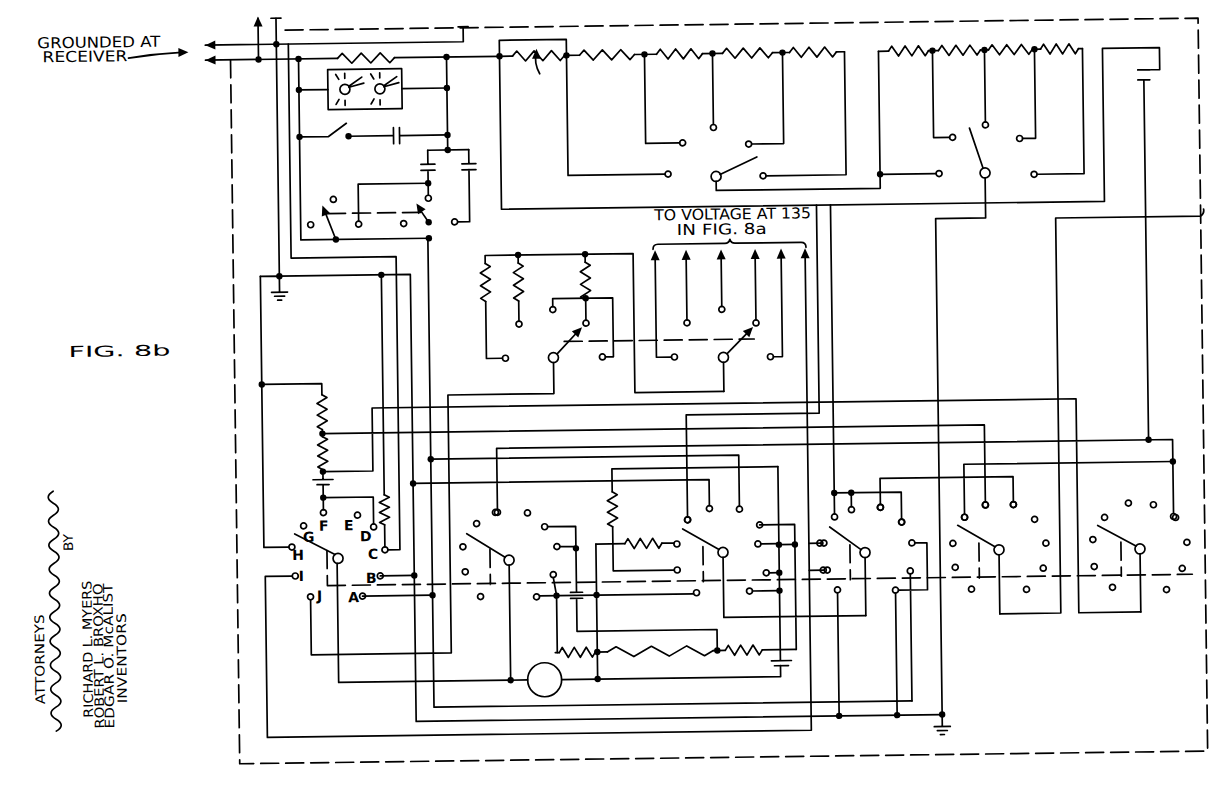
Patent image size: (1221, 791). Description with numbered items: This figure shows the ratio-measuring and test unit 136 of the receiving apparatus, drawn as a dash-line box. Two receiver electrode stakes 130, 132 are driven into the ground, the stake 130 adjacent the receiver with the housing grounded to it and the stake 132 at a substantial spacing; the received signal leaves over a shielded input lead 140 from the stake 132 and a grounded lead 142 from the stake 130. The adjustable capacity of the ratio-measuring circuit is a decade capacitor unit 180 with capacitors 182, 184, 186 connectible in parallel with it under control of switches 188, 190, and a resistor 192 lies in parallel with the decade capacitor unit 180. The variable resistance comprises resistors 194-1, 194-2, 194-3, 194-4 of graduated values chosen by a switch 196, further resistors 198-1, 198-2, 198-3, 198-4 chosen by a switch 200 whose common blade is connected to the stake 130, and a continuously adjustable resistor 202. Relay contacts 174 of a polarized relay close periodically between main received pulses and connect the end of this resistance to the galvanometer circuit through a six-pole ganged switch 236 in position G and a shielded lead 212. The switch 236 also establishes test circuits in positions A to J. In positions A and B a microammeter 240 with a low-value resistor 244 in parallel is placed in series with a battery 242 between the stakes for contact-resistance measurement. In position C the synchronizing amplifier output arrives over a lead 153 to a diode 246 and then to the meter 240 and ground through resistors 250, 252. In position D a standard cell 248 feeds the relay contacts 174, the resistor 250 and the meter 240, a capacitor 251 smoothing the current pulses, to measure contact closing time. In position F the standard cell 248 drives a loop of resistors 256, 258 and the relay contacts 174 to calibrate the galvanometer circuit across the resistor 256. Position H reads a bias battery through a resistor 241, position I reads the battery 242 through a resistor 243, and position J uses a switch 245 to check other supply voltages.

The receiver electrode stake 130 is at (222, 38).
The receiver electrode stake 132 is at (222, 57).
The ratio-measuring and test unit 136 is at (235, 186).
The shielded input lead 140 is at (262, 16).
The grounded lead 142 is at (283, 17).
The lead 153 is at (473, 21).
The relay contacts 174 is at (1147, 92).
The decade capacitor unit 180 is at (406, 70).
The capacitor 182 is at (403, 131).
The capacitor 184 is at (424, 166).
The capacitor 186 is at (473, 171).
The switch 188 is at (345, 127).
The switch 190 is at (374, 212).
The resistor 192 is at (399, 56).
The resistor 194-1 is at (611, 44).
The resistor 194-2 is at (683, 43).
The resistor 194-3 is at (752, 42).
The resistor 194-4 is at (816, 42).
The switch 196 is at (714, 180).
The resistor 198-1 is at (907, 41).
The resistor 198-2 is at (963, 40).
The resistor 198-3 is at (1017, 39).
The resistor 198-4 is at (1073, 38).
The switch 200 is at (982, 165).
The continuously adjustable resistor 202 is at (539, 69).
The lead 212 is at (1160, 227).
The six-pole ganged switch 236 is at (470, 584).
The microammeter 240 is at (560, 684).
The resistor 241 is at (640, 542).
The battery 242 is at (790, 668).
The resistor 243 is at (609, 504).
The resistor 244 is at (556, 652).
The switch 245 is at (650, 347).
The diode 246 is at (398, 533).
The standard cell 248 is at (316, 479).
The resistor 250 is at (654, 651).
The capacitor 251 is at (584, 600).
The resistor 252 is at (752, 656).
The resistor 256 is at (327, 406).
The resistor 258 is at (318, 451).